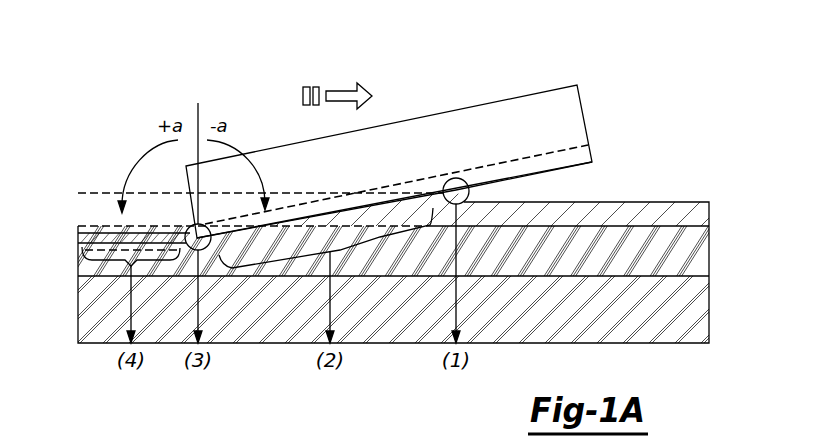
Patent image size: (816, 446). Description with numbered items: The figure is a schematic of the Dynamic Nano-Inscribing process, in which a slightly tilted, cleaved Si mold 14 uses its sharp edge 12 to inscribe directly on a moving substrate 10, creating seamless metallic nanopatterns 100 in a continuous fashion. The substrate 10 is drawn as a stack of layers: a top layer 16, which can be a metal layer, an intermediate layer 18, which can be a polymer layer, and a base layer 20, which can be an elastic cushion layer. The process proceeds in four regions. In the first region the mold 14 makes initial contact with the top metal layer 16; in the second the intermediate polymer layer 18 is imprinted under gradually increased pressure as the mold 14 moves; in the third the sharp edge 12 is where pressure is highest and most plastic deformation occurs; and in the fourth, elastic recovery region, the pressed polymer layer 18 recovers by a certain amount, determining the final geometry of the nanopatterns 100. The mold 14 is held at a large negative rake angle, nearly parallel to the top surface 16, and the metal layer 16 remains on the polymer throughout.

The substrate 10 is at (632, 196).
The sharp edge 12 is at (189, 233).
The Si mold 14 is at (498, 101).
The top layer 16 is at (710, 210).
The intermediate layer 18 is at (710, 257).
The base layer 20 is at (710, 312).
The nanopatterns 100 is at (92, 233).